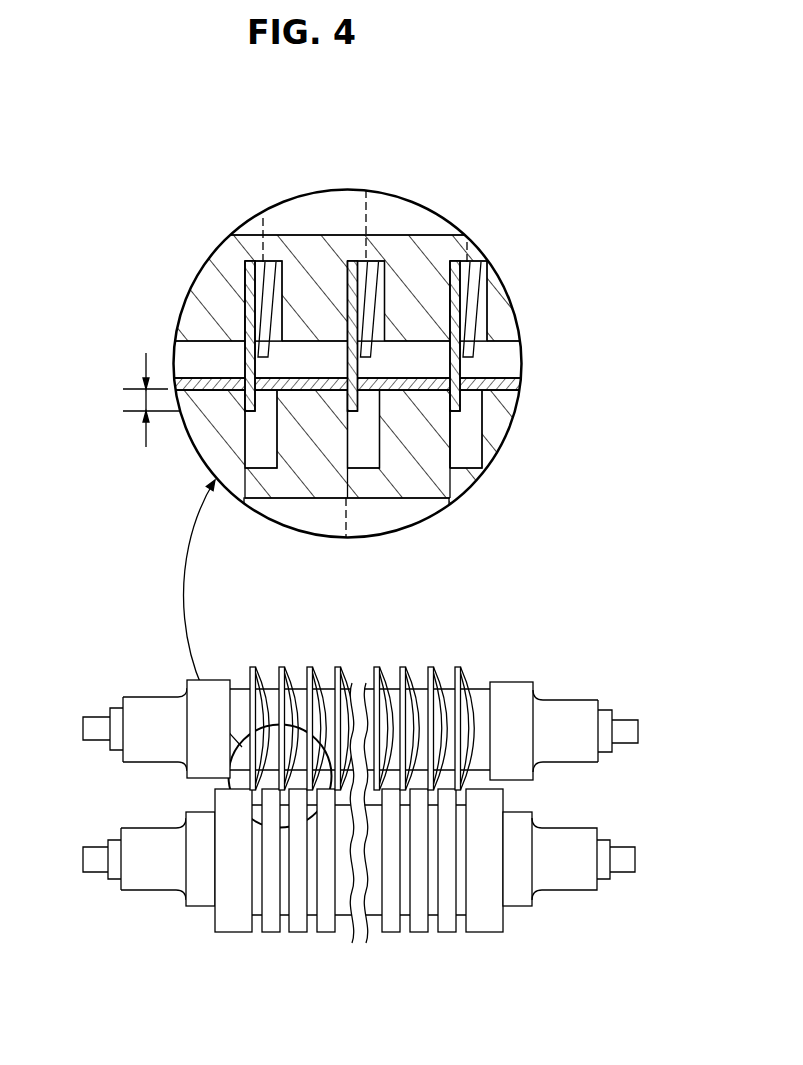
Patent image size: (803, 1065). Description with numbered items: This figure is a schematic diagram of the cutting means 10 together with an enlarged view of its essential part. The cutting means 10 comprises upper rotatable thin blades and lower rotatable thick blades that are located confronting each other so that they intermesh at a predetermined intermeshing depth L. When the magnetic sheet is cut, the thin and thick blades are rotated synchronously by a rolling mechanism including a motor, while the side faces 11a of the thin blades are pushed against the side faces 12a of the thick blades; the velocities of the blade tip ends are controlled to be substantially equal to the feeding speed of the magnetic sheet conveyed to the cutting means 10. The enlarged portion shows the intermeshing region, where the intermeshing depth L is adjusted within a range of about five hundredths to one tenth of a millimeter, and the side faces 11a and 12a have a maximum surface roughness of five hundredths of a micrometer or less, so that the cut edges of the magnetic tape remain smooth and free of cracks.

The cutting means 10 is at (512, 648).
The side faces of the thin blades 11a is at (346, 396).
The side faces of the thick blades 12a is at (453, 397).
The intermeshing depth L is at (140, 400).